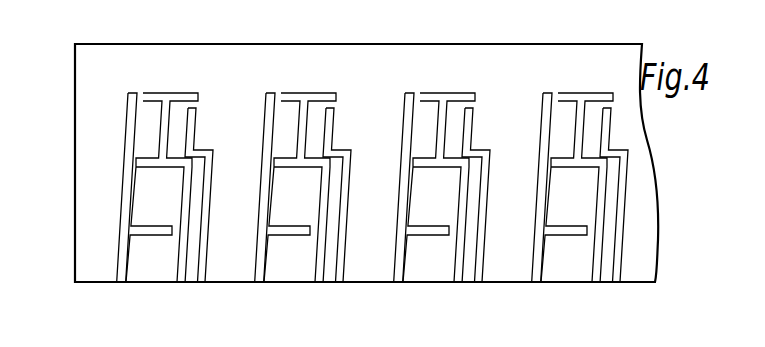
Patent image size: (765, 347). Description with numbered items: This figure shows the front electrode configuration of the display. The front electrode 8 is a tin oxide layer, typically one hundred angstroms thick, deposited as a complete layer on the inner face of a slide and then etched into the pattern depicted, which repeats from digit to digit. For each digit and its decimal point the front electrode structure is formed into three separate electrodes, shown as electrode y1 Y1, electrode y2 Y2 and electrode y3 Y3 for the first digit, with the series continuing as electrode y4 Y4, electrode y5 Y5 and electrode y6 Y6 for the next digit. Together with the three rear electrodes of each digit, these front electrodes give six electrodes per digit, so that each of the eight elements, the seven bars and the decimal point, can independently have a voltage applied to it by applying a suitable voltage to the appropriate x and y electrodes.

The front electrode 8 is at (174, 90).
The front electrode y1 Y1 is at (117, 268).
The front electrode y2 Y2 is at (180, 267).
The front electrode y3 Y3 is at (205, 263).
The front electrode y4 Y4 is at (246, 187).
The front electrode y5 Y5 is at (319, 187).
The front electrode y6 Y6 is at (349, 196).